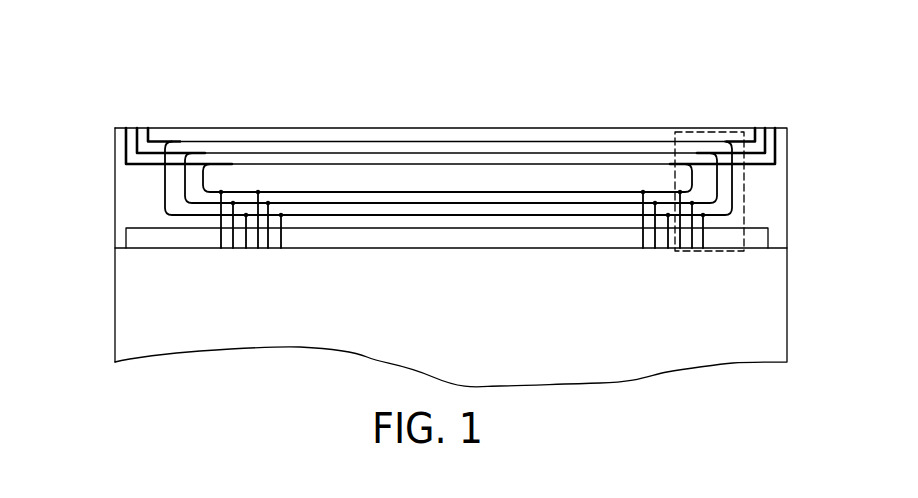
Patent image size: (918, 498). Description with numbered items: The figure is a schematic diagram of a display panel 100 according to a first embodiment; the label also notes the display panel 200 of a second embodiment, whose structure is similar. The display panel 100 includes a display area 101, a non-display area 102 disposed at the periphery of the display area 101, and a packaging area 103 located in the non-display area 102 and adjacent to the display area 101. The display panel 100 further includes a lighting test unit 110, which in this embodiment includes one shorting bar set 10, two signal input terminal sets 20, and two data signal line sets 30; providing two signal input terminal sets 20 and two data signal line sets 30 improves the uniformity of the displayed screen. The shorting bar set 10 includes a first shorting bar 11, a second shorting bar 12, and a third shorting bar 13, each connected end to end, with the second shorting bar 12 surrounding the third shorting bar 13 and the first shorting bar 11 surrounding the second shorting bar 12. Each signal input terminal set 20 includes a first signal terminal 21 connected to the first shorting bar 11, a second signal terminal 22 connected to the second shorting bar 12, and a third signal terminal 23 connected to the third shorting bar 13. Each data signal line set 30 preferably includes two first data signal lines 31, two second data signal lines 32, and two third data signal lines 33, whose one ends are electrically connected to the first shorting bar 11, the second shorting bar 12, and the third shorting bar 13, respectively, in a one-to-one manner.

The display panel 100 is at (475, 28).
The display panel 200 is at (451, 197).
The lighting test unit 110 is at (100, 177).
The shorting bar set 10 is at (453, 111).
The first shorting bar 11 is at (443, 140).
The second shorting bar 12 is at (483, 153).
The third shorting bar 13 is at (438, 92).
The signal input terminal set 20 is at (472, 150).
The first signal terminal 21 is at (158, 138).
The second signal terminal 22 is at (173, 152).
The third signal terminal 23 is at (163, 88).
The data signal line set 30 is at (360, 272).
The first data signal line 31 is at (280, 216).
The second data signal line 32 is at (267, 204).
The third data signal line 33 is at (257, 193).
The display area 101 is at (768, 283).
The non-display area 102 is at (768, 205).
The packaging area 103 is at (760, 242).